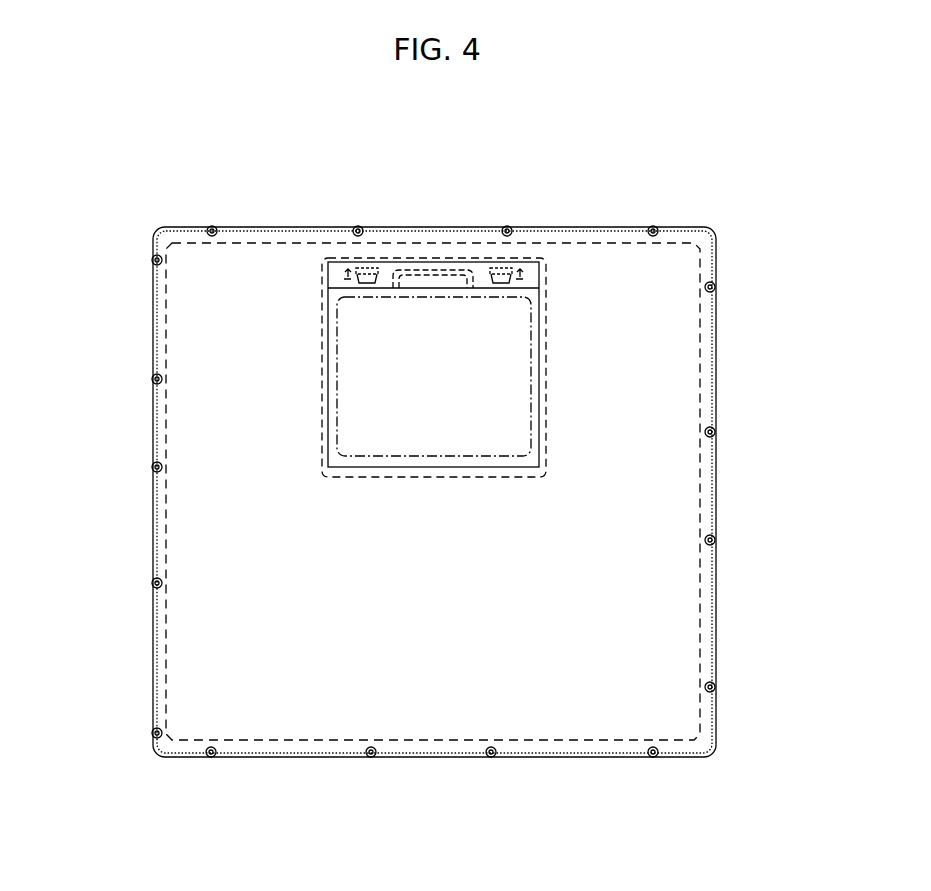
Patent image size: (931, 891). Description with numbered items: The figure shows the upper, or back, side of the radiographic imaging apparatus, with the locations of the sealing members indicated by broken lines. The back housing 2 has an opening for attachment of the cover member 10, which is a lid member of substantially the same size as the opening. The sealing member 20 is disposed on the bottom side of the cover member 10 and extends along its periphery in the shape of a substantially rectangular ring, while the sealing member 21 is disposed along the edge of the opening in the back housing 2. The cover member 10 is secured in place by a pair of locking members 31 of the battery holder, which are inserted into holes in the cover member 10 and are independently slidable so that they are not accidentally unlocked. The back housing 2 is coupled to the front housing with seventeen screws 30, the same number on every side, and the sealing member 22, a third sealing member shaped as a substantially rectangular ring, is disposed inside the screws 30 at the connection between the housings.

The back housing 2 is at (197, 299).
The cover member 10 is at (510, 414).
The sealing member 20 is at (422, 296).
The sealing member 21 is at (450, 270).
The sealing member 22 is at (576, 243).
The screws 30 is at (426, 489).
The locking members 31 is at (372, 266).